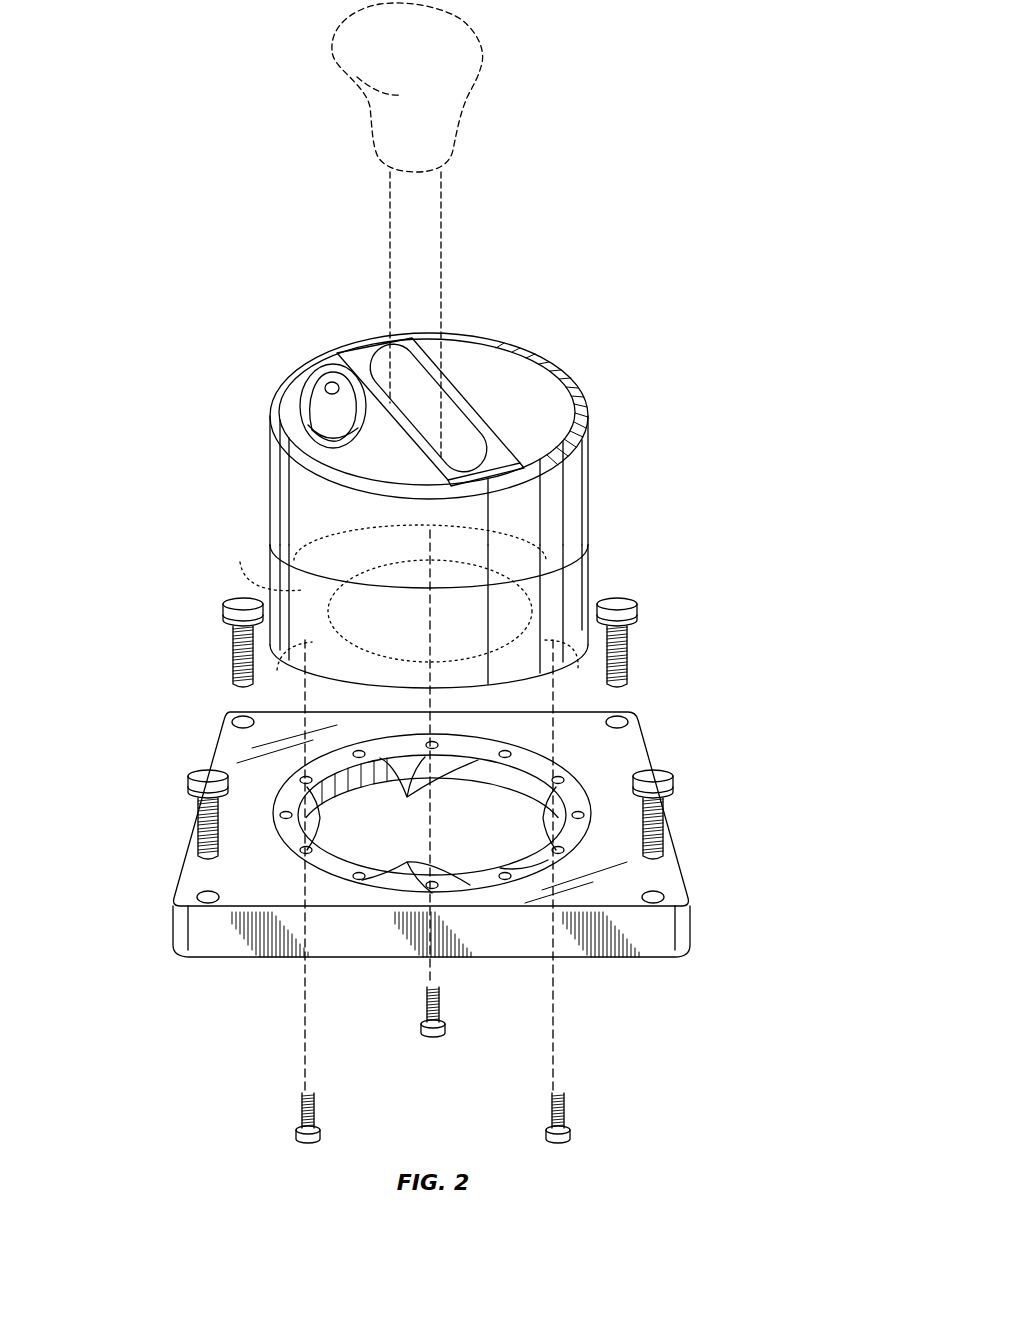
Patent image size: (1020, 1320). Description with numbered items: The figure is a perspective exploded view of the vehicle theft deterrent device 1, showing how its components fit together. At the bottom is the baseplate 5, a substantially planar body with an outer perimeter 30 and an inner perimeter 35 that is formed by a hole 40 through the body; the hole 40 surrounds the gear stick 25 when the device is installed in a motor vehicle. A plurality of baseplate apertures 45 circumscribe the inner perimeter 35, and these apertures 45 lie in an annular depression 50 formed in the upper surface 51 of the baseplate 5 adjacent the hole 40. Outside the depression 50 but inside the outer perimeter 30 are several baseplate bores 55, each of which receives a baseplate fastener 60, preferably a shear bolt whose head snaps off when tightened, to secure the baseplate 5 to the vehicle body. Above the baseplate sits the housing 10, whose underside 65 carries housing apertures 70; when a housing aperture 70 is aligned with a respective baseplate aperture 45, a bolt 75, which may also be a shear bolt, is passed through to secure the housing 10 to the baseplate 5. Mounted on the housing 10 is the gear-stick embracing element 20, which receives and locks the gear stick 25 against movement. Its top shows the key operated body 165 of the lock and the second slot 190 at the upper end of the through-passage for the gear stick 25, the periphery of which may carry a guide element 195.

The vehicle theft deterrent device 1 is at (176, 432).
The baseplate 5 is at (208, 747).
The housing 10 is at (590, 561).
The gear-stick embracing element 20 is at (590, 472).
The gear stick 25 is at (388, 216).
The outer perimeter 30 is at (530, 942).
The inner perimeter 35 is at (540, 868).
The hole 40 is at (432, 815).
The baseplate apertures 45 is at (322, 818).
The annular depression 50 is at (483, 735).
The upper surface 51 is at (432, 814).
The baseplate bores 55 is at (243, 718).
The baseplate fastener 60 is at (224, 612).
The underside 65 is at (265, 563).
The housing apertures 70 is at (430, 533).
The bolt 75 is at (300, 1133).
The key operated body 165 is at (306, 404).
The second slot 190 is at (382, 372).
The guide element 195 is at (352, 358).